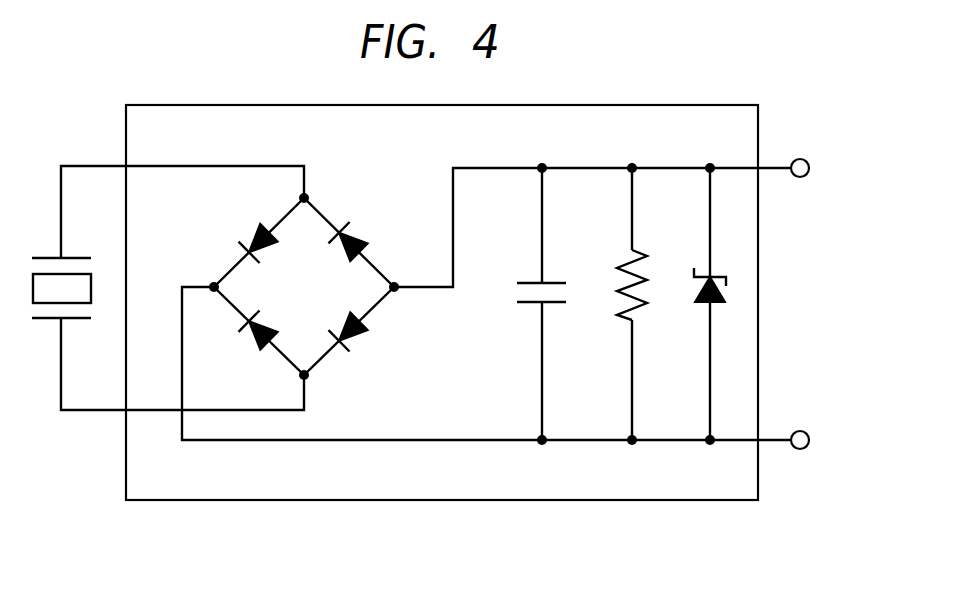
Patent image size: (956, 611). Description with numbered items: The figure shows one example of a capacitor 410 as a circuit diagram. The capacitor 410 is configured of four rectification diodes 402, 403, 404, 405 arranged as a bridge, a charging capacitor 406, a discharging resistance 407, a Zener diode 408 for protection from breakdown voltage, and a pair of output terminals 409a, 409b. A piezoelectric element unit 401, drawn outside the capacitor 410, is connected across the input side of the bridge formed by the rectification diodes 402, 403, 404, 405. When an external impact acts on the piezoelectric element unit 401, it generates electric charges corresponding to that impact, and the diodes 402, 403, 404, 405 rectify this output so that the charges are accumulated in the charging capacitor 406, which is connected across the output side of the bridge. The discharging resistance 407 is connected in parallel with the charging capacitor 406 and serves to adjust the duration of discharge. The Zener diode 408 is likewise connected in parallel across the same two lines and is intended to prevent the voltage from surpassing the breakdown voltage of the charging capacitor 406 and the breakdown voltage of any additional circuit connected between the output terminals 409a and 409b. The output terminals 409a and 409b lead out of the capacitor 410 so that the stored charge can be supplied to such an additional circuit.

The piezoelectric element unit 401 is at (45, 320).
The rectification diode 402 is at (255, 236).
The rectification diode 403 is at (255, 336).
The rectification diode 404 is at (355, 232).
The rectification diode 405 is at (362, 338).
The charging capacitor 406 is at (530, 305).
The discharging resistance 407 is at (627, 318).
The Zener diode 408 is at (702, 302).
The output terminal 409a is at (799, 158).
The output terminal 409b is at (800, 449).
The capacitor 410 is at (200, 502).